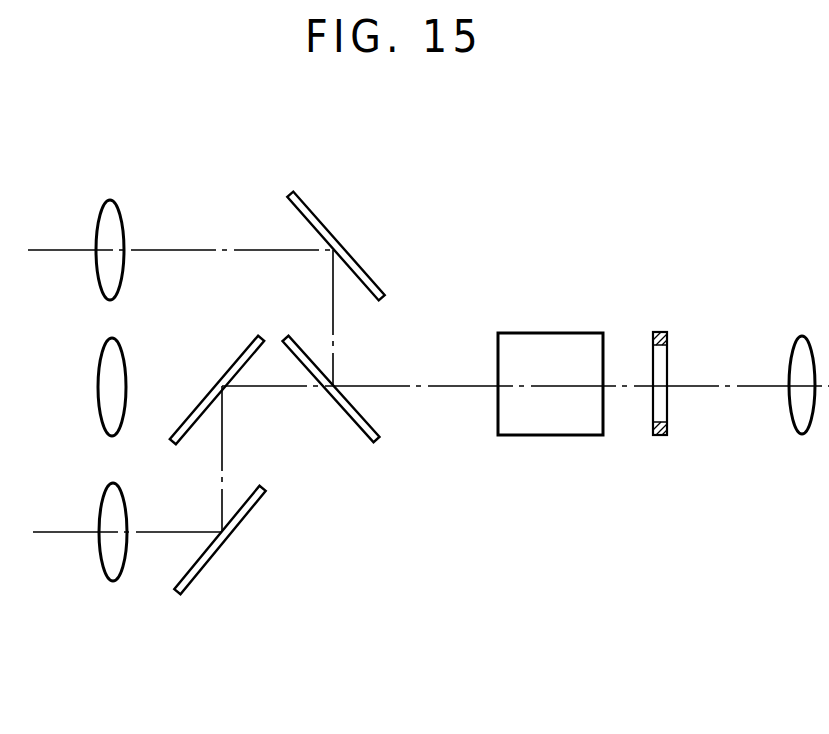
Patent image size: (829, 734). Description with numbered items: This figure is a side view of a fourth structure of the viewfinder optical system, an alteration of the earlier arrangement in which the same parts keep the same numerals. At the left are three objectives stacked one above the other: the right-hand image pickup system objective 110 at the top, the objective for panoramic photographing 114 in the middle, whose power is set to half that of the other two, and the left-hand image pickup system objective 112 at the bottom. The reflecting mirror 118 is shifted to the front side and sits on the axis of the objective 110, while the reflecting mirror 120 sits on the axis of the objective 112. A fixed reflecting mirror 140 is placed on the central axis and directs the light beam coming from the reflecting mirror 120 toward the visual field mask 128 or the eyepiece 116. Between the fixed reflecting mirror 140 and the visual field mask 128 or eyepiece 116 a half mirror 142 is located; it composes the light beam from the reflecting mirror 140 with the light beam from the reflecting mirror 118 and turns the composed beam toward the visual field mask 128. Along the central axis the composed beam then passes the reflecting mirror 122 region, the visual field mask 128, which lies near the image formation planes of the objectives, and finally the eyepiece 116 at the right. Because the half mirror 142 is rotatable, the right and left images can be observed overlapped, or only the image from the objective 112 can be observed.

The right-hand image pickup system objective 110 is at (107, 210).
The left-hand image pickup system objective 112 is at (117, 570).
The objective for panoramic photographing 114 is at (105, 387).
The eyepiece 116 is at (795, 345).
The reflecting mirror 118 is at (327, 228).
The reflecting mirror 120 is at (232, 535).
The reflecting mirror 122 is at (555, 337).
The visual field mask 128 is at (658, 330).
The fixed reflecting mirror 140 is at (238, 353).
The half mirror 142 is at (352, 418).